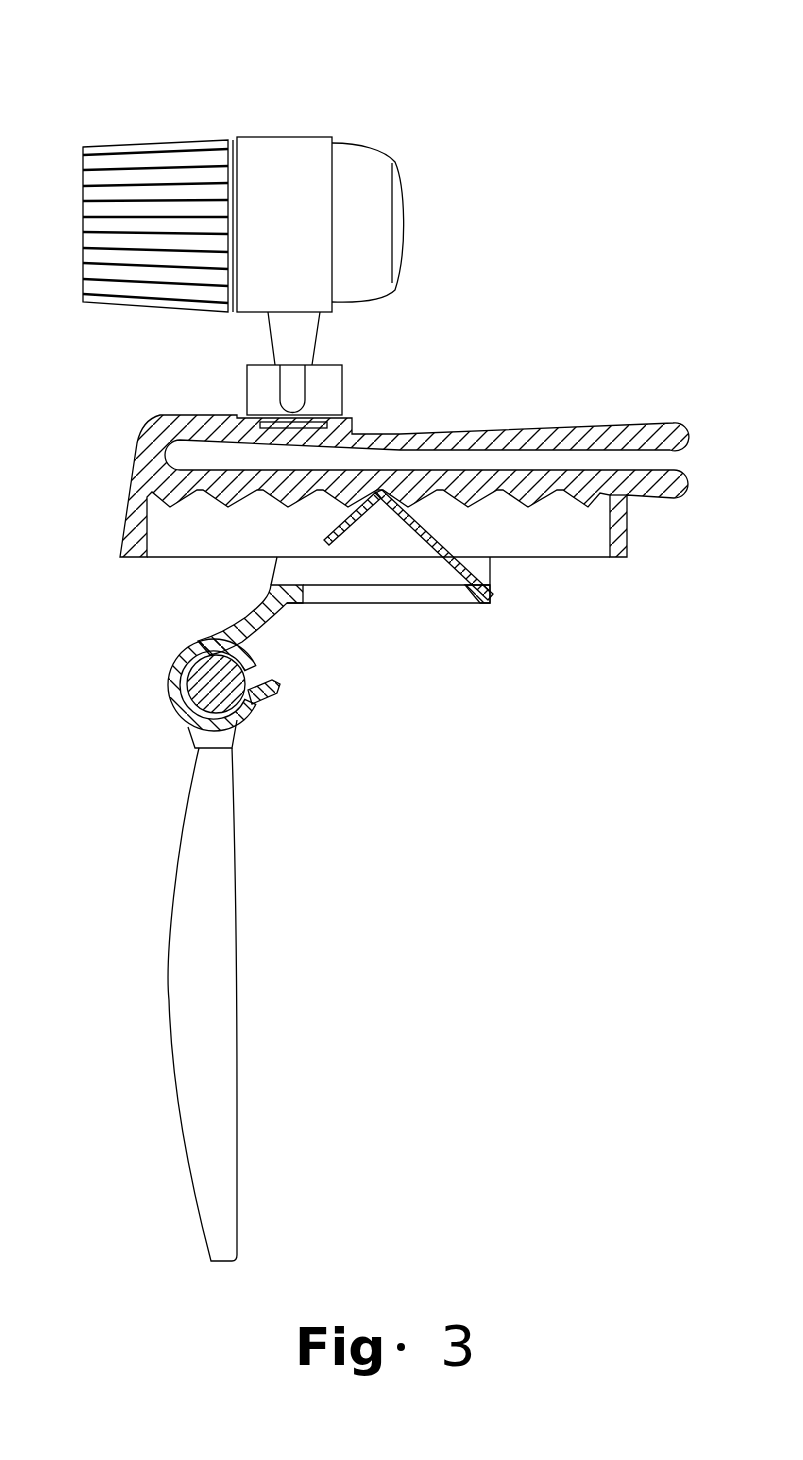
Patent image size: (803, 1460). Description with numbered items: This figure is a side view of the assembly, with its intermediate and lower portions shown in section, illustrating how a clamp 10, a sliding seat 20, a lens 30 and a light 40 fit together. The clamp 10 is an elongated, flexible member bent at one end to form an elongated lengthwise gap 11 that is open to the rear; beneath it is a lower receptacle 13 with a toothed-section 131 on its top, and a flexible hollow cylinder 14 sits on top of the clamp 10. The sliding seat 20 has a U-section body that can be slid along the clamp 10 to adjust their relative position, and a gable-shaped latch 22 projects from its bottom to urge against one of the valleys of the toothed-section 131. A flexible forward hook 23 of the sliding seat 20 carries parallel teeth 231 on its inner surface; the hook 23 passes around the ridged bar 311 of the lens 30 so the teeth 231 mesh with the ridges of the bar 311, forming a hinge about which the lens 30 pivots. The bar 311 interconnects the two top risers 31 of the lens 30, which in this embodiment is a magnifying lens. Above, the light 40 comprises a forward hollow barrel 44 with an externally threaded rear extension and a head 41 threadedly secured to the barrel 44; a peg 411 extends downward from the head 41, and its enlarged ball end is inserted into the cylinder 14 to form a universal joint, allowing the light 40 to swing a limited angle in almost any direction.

The clamp 10 is at (147, 477).
The gap 11 is at (568, 463).
The receptacle 13 is at (578, 547).
The toothed-section 131 is at (543, 500).
The hollow cylinder 14 is at (258, 392).
The sliding seat 20 is at (410, 580).
The latch 22 is at (388, 502).
The hook 23 is at (177, 659).
The teeth 231 is at (235, 703).
The lens 30 is at (215, 1016).
The risers 31 is at (205, 739).
The ridged bar 311 is at (215, 652).
The light 40 is at (290, 70).
The head 41 is at (305, 152).
The peg 411 is at (304, 328).
The barrel 44 is at (172, 148).